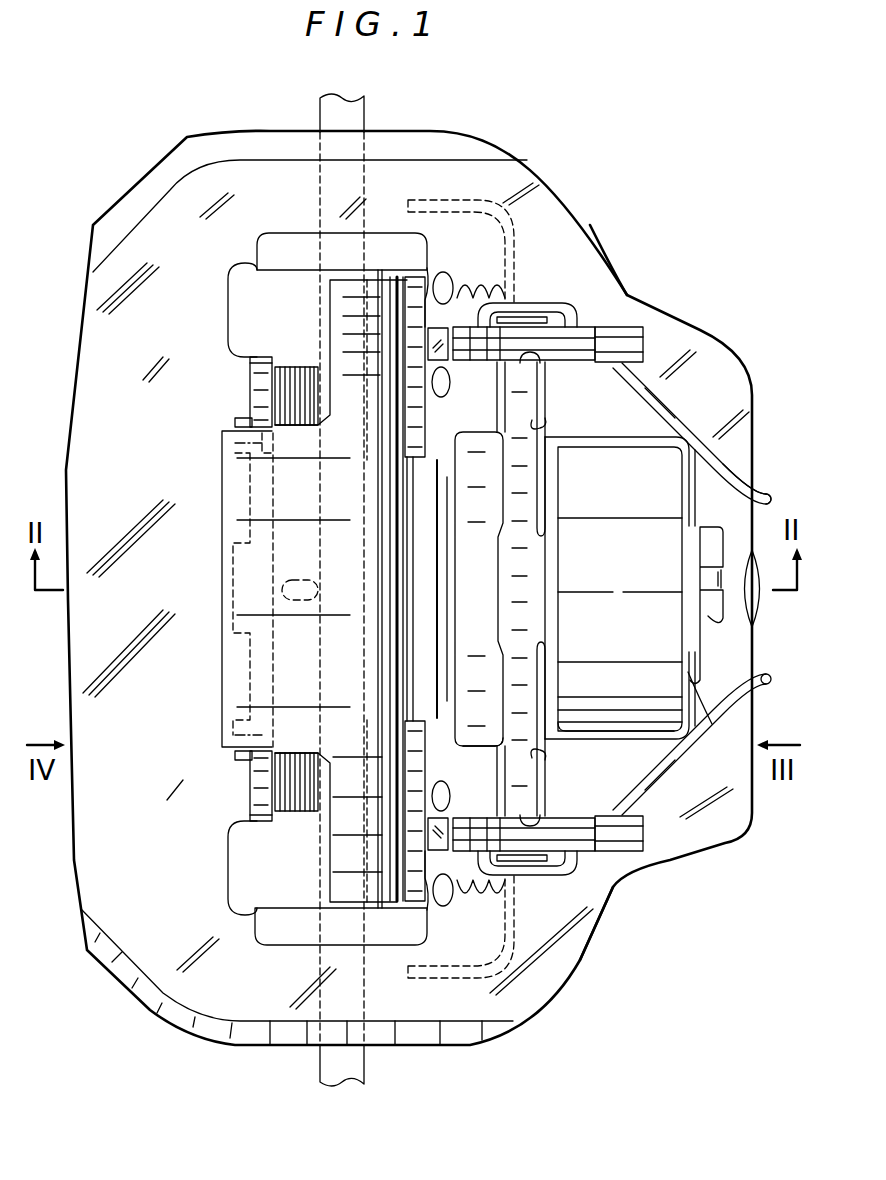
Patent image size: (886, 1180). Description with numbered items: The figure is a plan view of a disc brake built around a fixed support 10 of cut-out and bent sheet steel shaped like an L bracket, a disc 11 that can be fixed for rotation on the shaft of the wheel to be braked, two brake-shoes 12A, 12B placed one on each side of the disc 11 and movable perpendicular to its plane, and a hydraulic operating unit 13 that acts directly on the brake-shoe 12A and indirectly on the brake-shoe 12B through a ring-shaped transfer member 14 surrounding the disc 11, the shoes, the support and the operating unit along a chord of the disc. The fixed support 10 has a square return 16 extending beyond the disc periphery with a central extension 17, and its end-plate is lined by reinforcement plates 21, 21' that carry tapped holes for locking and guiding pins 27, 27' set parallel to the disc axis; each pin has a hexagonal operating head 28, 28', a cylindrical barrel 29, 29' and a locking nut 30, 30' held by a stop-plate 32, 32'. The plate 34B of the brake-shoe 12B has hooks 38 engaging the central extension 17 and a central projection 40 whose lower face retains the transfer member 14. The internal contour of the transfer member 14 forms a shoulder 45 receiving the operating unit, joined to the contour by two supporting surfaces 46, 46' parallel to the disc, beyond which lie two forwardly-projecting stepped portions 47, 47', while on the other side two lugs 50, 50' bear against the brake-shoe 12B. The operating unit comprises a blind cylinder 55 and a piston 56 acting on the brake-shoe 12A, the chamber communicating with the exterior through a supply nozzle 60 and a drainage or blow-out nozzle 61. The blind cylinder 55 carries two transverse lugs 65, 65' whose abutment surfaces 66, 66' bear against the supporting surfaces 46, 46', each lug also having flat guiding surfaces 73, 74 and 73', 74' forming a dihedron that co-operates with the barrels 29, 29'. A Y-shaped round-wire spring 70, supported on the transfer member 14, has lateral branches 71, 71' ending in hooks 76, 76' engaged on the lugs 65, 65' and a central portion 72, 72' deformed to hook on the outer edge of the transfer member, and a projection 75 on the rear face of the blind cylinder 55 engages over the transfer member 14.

The fixed support 10 is at (327, 871).
The disc 11 is at (322, 118).
The brake-shoe 12A is at (440, 598).
The brake-shoe 12B is at (285, 354).
The hydraulic operating unit 13 is at (653, 737).
The transfer member 14 is at (133, 200).
The square return 16 is at (340, 848).
The central extension 17 is at (222, 633).
The reinforcement plate 21 is at (464, 271).
The reinforcement plate 21' is at (465, 914).
The locking and guiding pin 27 is at (630, 272).
The locking and guiding pin 27' is at (624, 911).
The hexagonal operating head 28 is at (645, 320).
The hexagonal operating head 28' is at (650, 856).
The cylindrical barrel 29 is at (526, 312).
The cylindrical barrel 29' is at (533, 859).
The locking nut 30 is at (459, 297).
The locking nut 30' is at (462, 886).
The stop-plate 32 is at (395, 331).
The stop-plate 32' is at (396, 849).
The plate 34B is at (258, 355).
The hook 38 is at (235, 431).
The projection 40 is at (233, 553).
The shoulder 45 is at (637, 450).
The supporting surface 46 is at (620, 465).
The supporting surface 46' is at (617, 714).
The forwardly-projecting stepped portion 47 is at (462, 386).
The forwardly-projecting stepped portion 47' is at (464, 793).
The lug 50 is at (231, 392).
The lug 50' is at (232, 786).
The blind cylinder 55 is at (633, 705).
The piston 56 is at (497, 633).
The supply nozzle 60 is at (709, 722).
The drainage or blow-out nozzle 61 is at (695, 493).
The transverse lug 65 is at (479, 589).
The transverse lug 65' is at (482, 760).
The abutment surface 66 is at (561, 371).
The abutment surface 66' is at (565, 805).
The spring 70 is at (692, 424).
The lateral branch 71 is at (663, 372).
The lateral branch 71' is at (669, 802).
The central portion 72 is at (781, 476).
The central portion 72' is at (781, 697).
The flat guiding surface 73 is at (558, 405).
The flat guiding surface 73' is at (556, 771).
The flat guiding surface 74 is at (527, 294).
The flat guiding surface 74' is at (527, 882).
The projection 75 is at (725, 622).
The hook 76 is at (477, 251).
The hook 76' is at (478, 927).